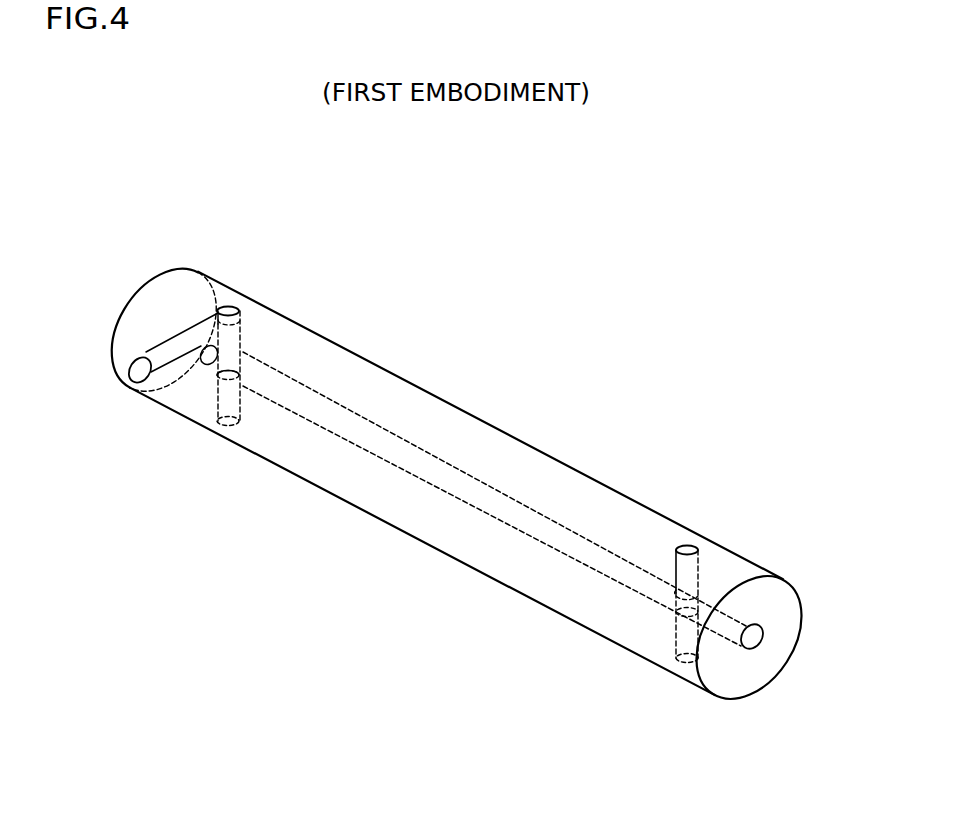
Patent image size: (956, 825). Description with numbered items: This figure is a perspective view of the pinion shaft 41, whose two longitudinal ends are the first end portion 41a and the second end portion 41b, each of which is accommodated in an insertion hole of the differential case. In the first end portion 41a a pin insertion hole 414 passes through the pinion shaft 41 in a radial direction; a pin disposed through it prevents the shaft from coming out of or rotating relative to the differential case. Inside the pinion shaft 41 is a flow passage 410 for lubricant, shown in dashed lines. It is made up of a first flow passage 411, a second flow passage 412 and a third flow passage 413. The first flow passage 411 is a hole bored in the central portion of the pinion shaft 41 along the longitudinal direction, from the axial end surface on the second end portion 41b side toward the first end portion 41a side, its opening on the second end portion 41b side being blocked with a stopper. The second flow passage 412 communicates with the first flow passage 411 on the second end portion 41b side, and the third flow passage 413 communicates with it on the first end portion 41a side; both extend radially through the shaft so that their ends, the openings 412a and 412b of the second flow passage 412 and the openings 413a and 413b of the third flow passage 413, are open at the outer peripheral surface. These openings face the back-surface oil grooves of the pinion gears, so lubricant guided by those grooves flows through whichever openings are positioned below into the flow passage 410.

The pinion shaft 41 is at (469, 476).
The first end portion 41a is at (138, 311).
The second end portion 41b is at (790, 605).
The flow passage 410 is at (505, 497).
The first flow passage 411 is at (367, 418).
The second flow passage 412 is at (705, 599).
The opening of the second flow passage 412a is at (683, 661).
The opening of the second flow passage 412b is at (685, 546).
The third flow passage 413 is at (250, 349).
The opening of the third flow passage 413a is at (228, 424).
The opening of the third flow passage 413b is at (229, 304).
The pin insertion hole 414 is at (140, 352).